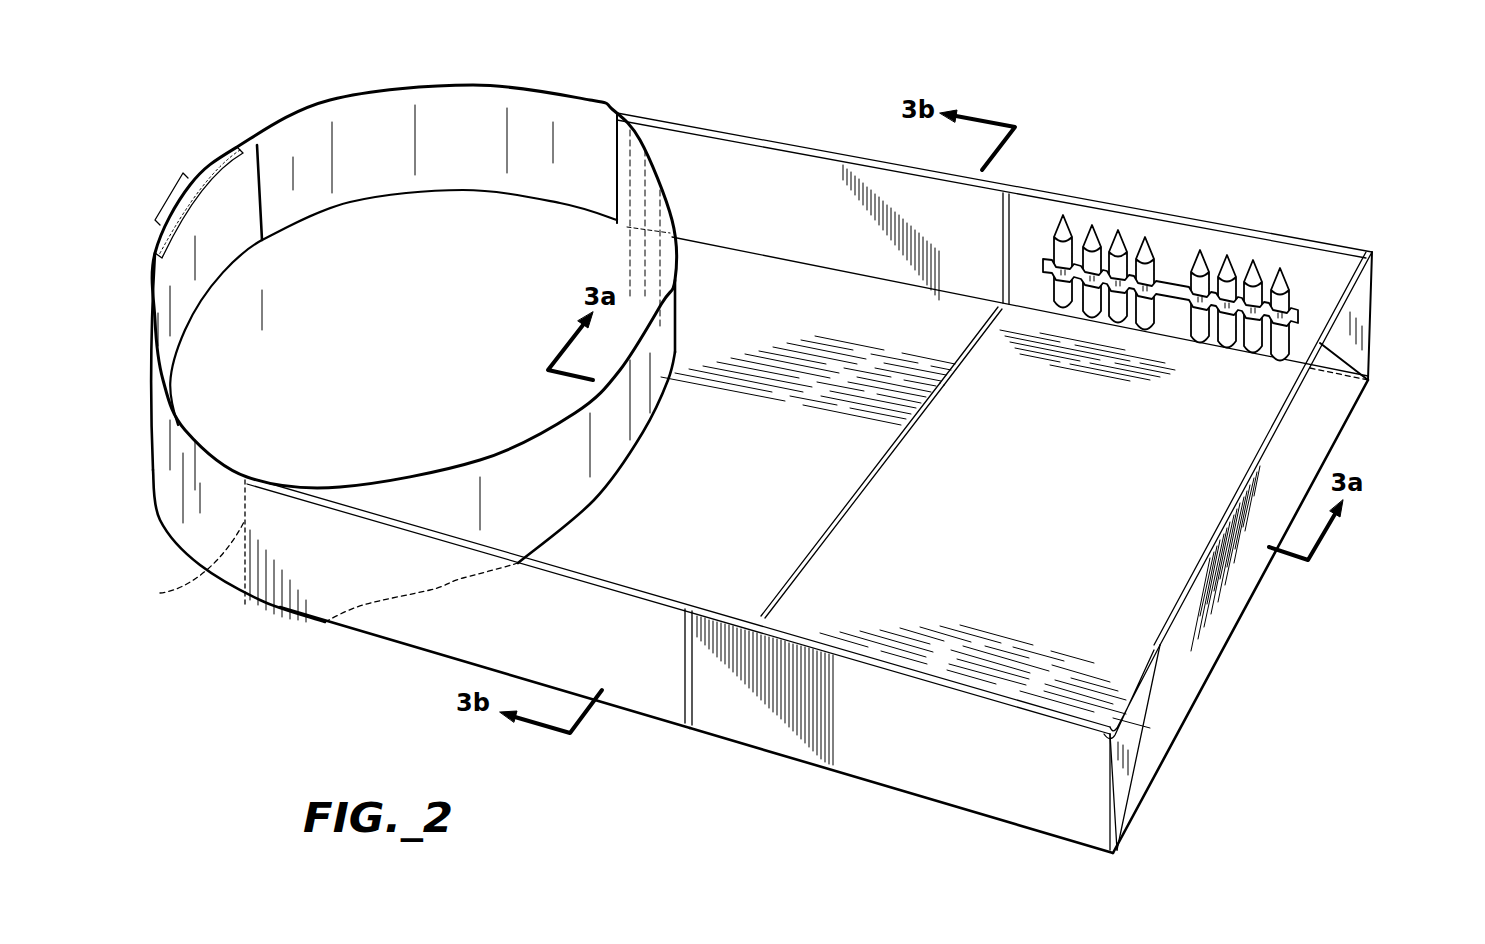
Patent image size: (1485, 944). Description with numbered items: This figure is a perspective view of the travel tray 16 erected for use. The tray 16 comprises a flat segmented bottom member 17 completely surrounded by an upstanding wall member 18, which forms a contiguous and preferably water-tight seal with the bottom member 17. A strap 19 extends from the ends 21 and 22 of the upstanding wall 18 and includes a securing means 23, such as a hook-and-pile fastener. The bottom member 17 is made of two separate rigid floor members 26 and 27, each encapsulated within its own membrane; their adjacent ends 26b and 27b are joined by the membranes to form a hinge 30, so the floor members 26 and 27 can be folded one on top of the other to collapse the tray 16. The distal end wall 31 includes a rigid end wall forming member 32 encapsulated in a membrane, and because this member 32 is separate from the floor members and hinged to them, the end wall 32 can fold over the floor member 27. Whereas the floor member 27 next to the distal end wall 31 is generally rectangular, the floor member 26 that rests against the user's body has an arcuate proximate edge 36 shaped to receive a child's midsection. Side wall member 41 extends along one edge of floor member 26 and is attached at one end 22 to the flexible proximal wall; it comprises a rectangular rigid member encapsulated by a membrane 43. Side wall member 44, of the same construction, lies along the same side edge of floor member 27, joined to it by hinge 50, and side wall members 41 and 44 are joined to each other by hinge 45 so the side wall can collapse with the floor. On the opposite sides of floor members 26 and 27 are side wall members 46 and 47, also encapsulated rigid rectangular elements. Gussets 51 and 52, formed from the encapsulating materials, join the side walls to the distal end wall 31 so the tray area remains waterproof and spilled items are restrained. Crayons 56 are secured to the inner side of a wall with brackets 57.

The travel tray 16 is at (1086, 132).
The bottom member 17 is at (712, 174).
The upstanding wall member 18 is at (649, 688).
The strap 19 is at (442, 110).
The end of upstanding wall 21 is at (613, 147).
The end of upstanding wall 22 is at (184, 560).
The securing means 23 is at (222, 157).
The floor member 26 is at (730, 536).
The adjacent end of floor member 26b is at (902, 437).
The floor member 27 is at (1027, 555).
The adjacent end of floor member 27b is at (872, 465).
The hinge 30 is at (937, 395).
The distal end wall 31 is at (1241, 590).
The rigid end wall forming member 32 is at (1337, 413).
The arcuate proximate edge 36 is at (600, 500).
The side wall member 41 is at (540, 640).
The membrane 43 is at (403, 623).
The side wall member 44 is at (947, 770).
The hinge 45 is at (687, 693).
The side wall member 46 is at (784, 221).
The side wall member 47 is at (1160, 230).
The hinge 50 is at (975, 817).
The gusset 51 is at (1370, 303).
The gusset 52 is at (1132, 709).
The crayons 56 is at (1227, 250).
The brackets 57 is at (1173, 307).